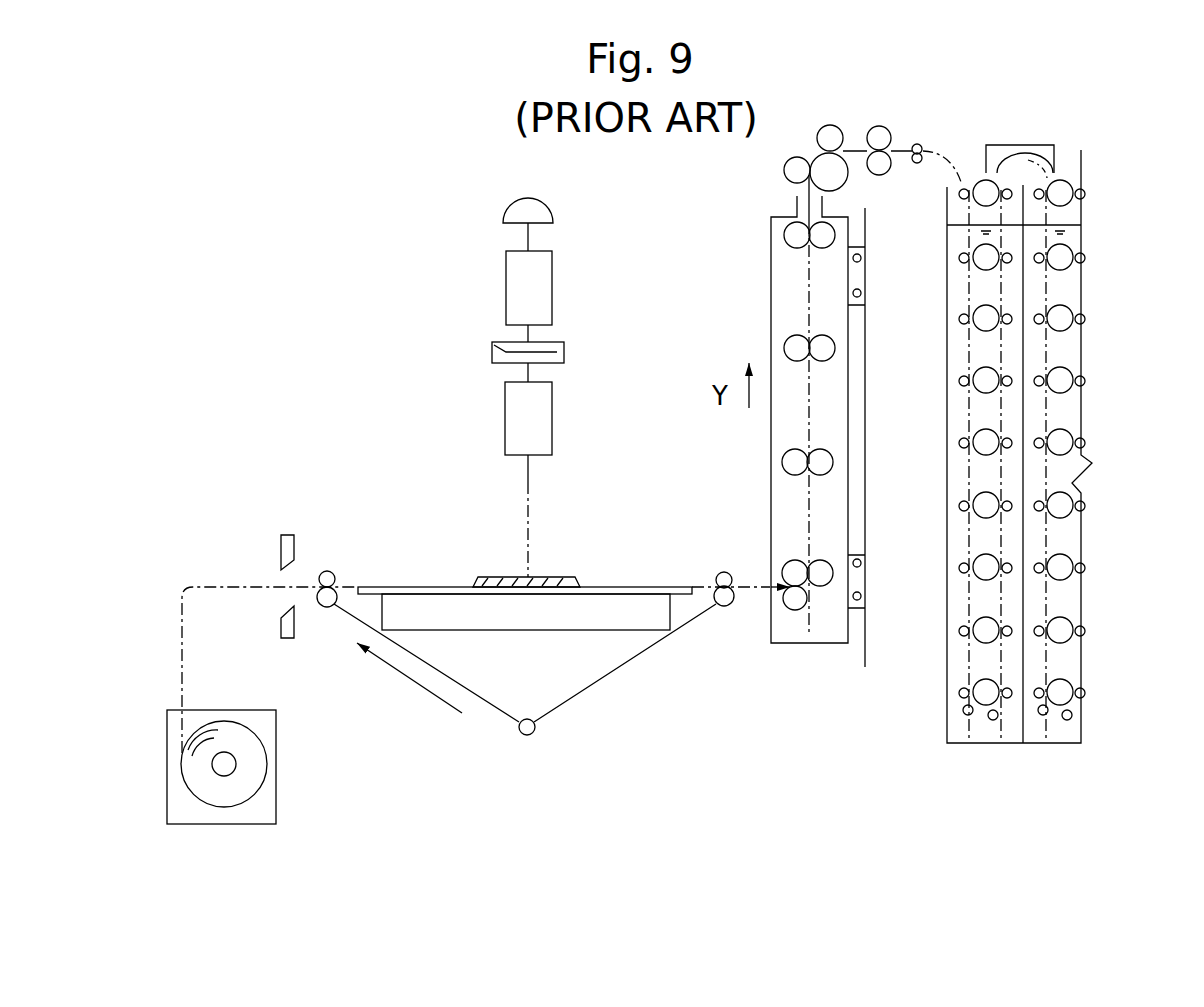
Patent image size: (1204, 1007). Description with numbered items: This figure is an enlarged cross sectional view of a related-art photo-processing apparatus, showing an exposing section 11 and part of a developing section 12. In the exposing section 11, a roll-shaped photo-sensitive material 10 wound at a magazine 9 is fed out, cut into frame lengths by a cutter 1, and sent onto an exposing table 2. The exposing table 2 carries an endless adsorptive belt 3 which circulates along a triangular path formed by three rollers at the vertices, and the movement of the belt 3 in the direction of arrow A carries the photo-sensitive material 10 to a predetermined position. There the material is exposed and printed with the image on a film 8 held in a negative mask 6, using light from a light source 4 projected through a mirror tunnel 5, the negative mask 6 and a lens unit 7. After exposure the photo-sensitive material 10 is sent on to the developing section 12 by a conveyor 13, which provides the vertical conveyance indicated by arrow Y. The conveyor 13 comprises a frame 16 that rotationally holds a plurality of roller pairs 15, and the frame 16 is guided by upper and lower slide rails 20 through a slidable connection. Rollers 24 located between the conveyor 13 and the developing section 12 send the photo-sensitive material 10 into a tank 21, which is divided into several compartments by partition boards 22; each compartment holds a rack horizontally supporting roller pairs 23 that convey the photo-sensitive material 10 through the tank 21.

The cutter 1 is at (272, 455).
The exposing table 2 is at (442, 587).
The endless adsorptive belt 3 is at (615, 680).
The light source 4 is at (543, 203).
The mirror tunnel 5 is at (552, 282).
The negative mask 6 is at (564, 357).
The lens unit 7 is at (552, 427).
The film 8 is at (495, 345).
The magazine 9 is at (276, 783).
The photo-sensitive material 10 is at (537, 578).
The exposing section 11 is at (338, 252).
The developing section 12 is at (1088, 767).
The conveyor 13 is at (873, 773).
The roller pairs 15 is at (788, 245).
The frame 16 is at (800, 645).
The slide rails 20 is at (865, 275).
The tank 21 is at (1053, 730).
The partition boards 22 is at (1023, 348).
The roller pairs 23 is at (960, 335).
The rollers 24 is at (898, 178).